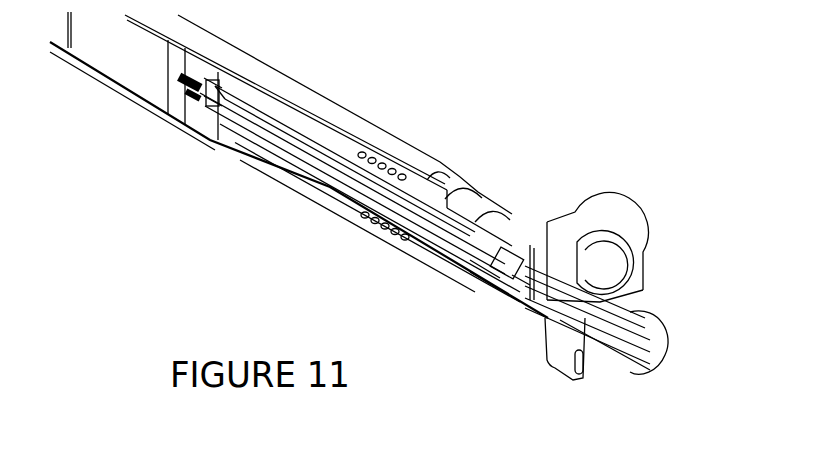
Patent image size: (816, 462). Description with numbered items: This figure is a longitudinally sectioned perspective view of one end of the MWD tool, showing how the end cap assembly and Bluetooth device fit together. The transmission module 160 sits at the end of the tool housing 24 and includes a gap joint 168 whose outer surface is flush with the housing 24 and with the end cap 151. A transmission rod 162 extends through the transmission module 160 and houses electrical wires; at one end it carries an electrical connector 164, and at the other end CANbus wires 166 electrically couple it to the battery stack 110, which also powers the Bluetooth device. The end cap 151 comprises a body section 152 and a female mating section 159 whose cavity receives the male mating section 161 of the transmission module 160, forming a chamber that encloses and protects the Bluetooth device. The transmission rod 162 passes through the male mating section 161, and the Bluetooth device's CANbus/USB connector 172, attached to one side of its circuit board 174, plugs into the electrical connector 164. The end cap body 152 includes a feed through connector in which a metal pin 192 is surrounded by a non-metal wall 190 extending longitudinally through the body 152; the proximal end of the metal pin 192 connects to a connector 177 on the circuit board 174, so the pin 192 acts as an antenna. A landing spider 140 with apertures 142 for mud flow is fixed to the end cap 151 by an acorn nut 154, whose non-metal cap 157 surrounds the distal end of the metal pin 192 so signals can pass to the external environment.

The tool housing 24 is at (244, 65).
The battery stack 110 is at (110, 60).
The CANbus wires 166 is at (187, 100).
The gap joint 168 is at (450, 180).
The transmission module 160 is at (305, 183).
The transmission rod 162 is at (362, 190).
The male mating section 161 is at (460, 285).
The CANbus/USB connector 172 is at (502, 280).
The circuit board 174 is at (516, 285).
The female mating section 159 is at (478, 195).
The electrical connector 164 is at (498, 265).
The connector 177 is at (530, 263).
The landing spider 140 is at (588, 223).
The apertures 142 is at (595, 247).
The acorn nut 154 is at (623, 295).
The end cap 151 is at (612, 318).
The body section 152 is at (618, 345).
The cap 157 is at (663, 345).
The non-metal wall 190 is at (575, 322).
The metal pin 192 is at (610, 343).